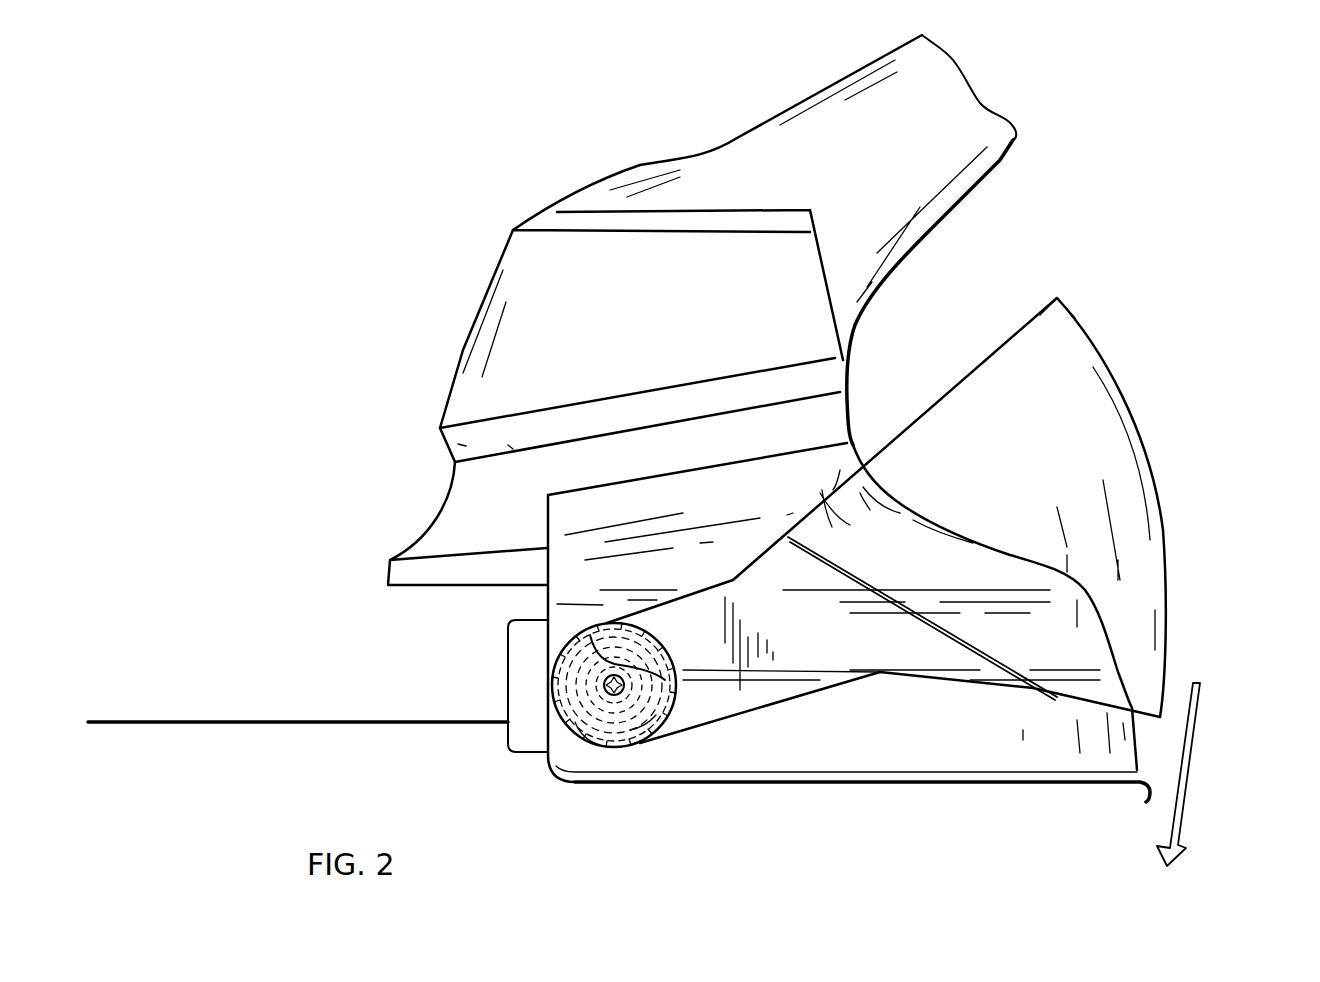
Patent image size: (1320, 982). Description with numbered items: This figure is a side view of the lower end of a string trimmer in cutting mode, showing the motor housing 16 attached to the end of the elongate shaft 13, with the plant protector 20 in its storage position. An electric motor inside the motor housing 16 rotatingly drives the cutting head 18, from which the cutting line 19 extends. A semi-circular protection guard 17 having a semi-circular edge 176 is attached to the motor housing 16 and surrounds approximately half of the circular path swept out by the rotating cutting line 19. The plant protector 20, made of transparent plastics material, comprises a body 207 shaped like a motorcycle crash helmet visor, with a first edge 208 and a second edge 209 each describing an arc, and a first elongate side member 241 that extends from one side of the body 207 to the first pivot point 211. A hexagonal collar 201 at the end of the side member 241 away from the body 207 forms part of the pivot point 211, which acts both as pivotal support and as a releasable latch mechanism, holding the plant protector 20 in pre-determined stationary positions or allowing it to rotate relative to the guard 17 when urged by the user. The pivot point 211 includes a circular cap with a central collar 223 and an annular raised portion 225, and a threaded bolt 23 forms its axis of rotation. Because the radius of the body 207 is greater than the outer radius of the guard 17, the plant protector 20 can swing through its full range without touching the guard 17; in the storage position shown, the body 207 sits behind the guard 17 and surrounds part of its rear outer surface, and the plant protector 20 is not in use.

The elongate shaft 13 is at (906, 176).
The motor housing 16 is at (632, 306).
The protection guard 17 is at (873, 757).
The cutting head 18 is at (528, 725).
The cutting line 19 is at (277, 718).
The plant protector 20 is at (1090, 427).
The threaded bolt 23 is at (603, 690).
The semi-circular edge 176 is at (1150, 780).
The hexagonal collar 201 is at (592, 633).
The body 207 is at (1157, 525).
The first edge 208 is at (1042, 700).
The second edge 209 is at (1017, 330).
The first pivot point 211 is at (590, 743).
The central collar 223 is at (620, 763).
The annular raised portion 225 is at (636, 750).
The first elongate side member 241 is at (725, 650).